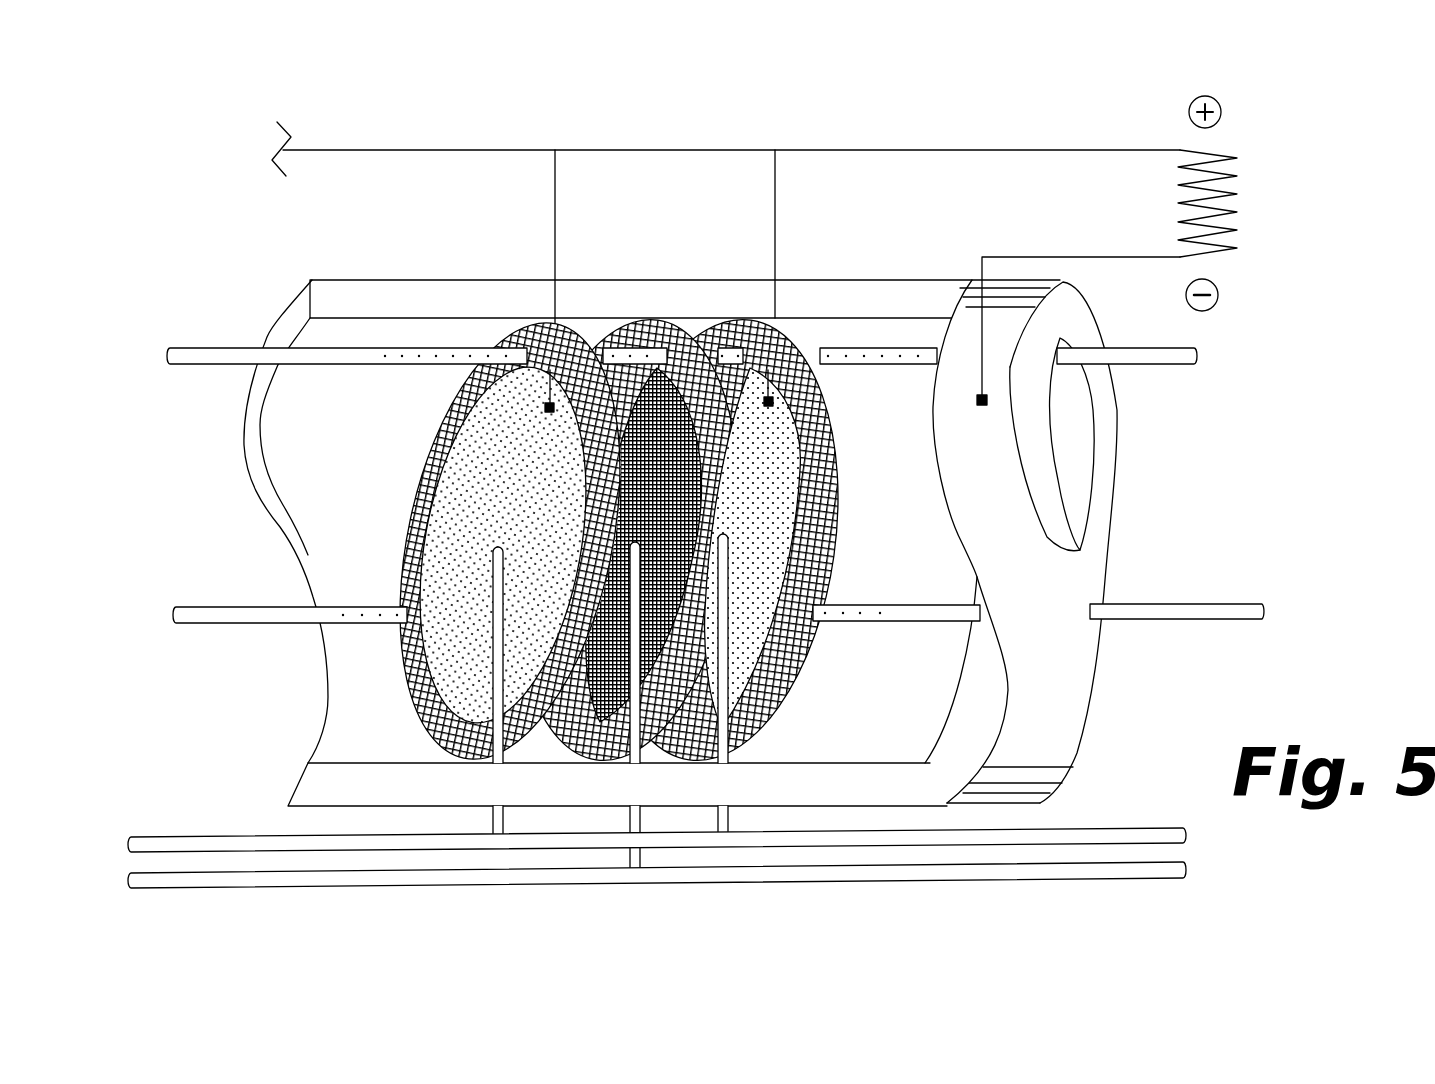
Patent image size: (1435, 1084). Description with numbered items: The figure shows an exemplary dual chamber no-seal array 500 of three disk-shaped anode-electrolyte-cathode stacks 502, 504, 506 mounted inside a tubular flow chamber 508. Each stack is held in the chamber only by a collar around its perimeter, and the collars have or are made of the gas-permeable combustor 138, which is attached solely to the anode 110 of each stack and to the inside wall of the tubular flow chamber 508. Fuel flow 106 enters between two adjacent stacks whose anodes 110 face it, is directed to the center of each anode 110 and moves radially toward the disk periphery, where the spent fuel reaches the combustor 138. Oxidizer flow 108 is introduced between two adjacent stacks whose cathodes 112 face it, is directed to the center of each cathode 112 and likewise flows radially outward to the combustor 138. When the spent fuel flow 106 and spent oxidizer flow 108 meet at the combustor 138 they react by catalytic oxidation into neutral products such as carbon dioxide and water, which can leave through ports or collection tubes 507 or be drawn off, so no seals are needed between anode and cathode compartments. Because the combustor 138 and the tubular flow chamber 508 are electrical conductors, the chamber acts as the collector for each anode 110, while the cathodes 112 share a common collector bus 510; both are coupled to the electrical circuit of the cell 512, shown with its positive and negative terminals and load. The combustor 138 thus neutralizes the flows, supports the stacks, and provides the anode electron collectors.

The no-seal array 500 is at (868, 105).
The anode-electrolyte-cathode stack 502 is at (417, 723).
The anode-electrolyte-cathode stack 504 is at (617, 337).
The anode-electrolyte-cathode stack 506 is at (803, 337).
The combustor 138 is at (559, 503).
The cathode 112 is at (910, 574).
The anode 110 is at (654, 503).
The collection tubes 507 is at (243, 347).
The tubular flow chamber 508 is at (1080, 710).
The common collector bus 510 is at (390, 150).
The electrical circuit 512 is at (1238, 172).
The fuel flow 106 is at (1020, 872).
The oxidizer flow 108 is at (1057, 838).